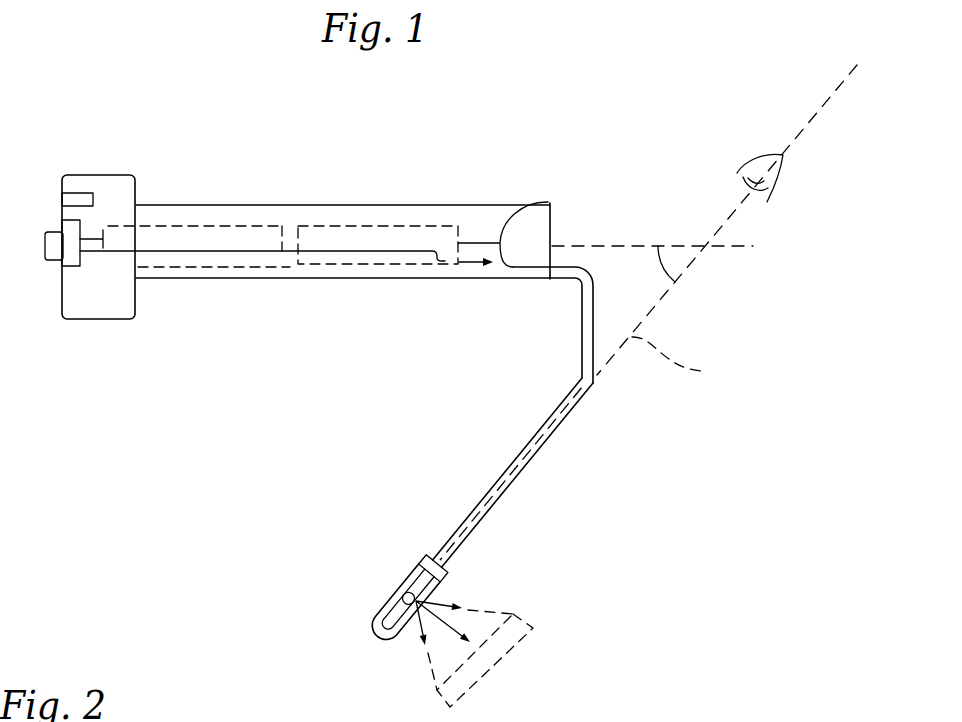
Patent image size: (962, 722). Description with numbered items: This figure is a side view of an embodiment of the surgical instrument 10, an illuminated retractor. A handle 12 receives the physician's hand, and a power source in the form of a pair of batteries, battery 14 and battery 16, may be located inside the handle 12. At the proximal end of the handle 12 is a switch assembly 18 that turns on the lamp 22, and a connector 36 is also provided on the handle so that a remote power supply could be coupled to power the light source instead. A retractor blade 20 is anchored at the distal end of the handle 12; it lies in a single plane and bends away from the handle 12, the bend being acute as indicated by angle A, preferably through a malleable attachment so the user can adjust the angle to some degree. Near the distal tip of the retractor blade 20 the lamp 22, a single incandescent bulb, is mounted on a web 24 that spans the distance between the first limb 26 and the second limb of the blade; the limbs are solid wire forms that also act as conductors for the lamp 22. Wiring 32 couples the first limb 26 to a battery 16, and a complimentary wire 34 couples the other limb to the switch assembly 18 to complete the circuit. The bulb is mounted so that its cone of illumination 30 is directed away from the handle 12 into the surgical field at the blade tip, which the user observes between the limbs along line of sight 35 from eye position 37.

The surgical instrument 10 is at (373, 172).
The handle 12 is at (478, 203).
The battery 14 is at (170, 238).
The battery 16 is at (410, 260).
The switch assembly 18 is at (58, 268).
The retractor blade 20 is at (616, 456).
The lamp 22 is at (400, 583).
The web 24 is at (418, 563).
The first limb 26 is at (527, 470).
The cone of illumination 30 is at (488, 611).
The wiring 32 is at (550, 204).
The complimentary wire 34 is at (341, 251).
The line of sight 35 is at (680, 359).
The connector 36 is at (72, 192).
The eye position 37 is at (752, 175).
The angle A is at (665, 278).